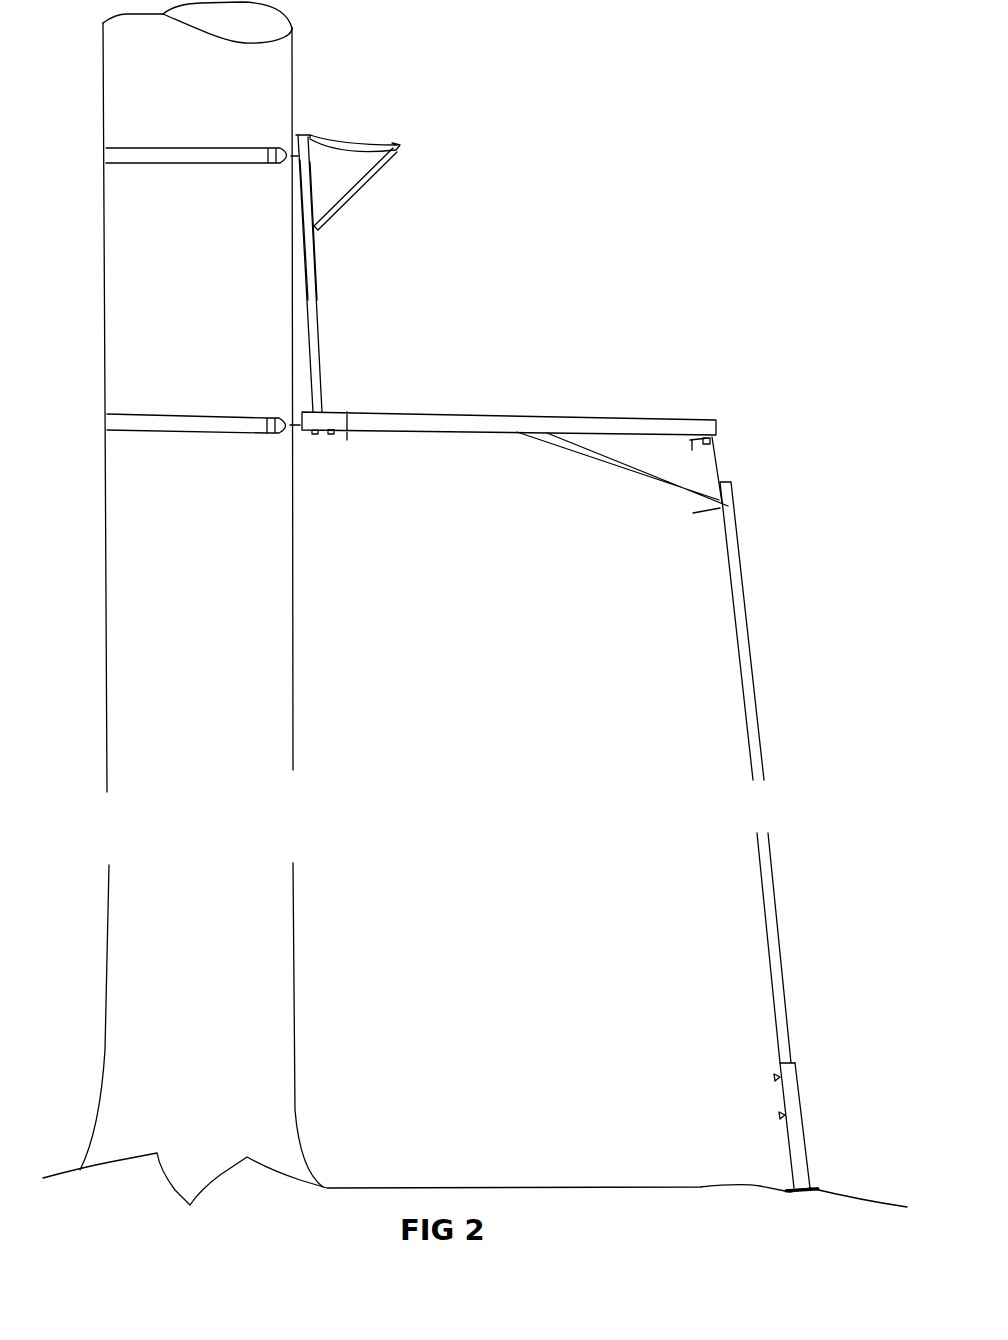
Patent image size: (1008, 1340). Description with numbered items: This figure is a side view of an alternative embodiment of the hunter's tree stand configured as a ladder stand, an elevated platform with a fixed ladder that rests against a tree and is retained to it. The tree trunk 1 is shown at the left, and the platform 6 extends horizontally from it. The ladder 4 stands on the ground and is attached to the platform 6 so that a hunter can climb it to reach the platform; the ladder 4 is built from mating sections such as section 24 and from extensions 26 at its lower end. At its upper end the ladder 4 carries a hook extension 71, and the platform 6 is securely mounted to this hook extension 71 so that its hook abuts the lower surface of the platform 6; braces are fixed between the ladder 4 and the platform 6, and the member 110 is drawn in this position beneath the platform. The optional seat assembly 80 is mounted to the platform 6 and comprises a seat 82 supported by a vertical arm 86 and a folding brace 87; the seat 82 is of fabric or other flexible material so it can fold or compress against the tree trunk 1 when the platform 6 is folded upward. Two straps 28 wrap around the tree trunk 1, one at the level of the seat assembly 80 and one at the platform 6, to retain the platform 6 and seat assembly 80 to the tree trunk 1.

The tree trunk 1 is at (277, 650).
The ladder 4 is at (743, 600).
The platform 6 is at (427, 413).
The ladder section 24 is at (780, 930).
The ladder extension 26 is at (802, 1118).
The strap 28 is at (105, 155).
The hook extension 71 is at (717, 465).
The seat assembly 80 is at (335, 315).
The seat 82 is at (353, 146).
The vertical arm 86 is at (320, 298).
The folding brace 87 is at (355, 187).
The brace 110 is at (598, 452).